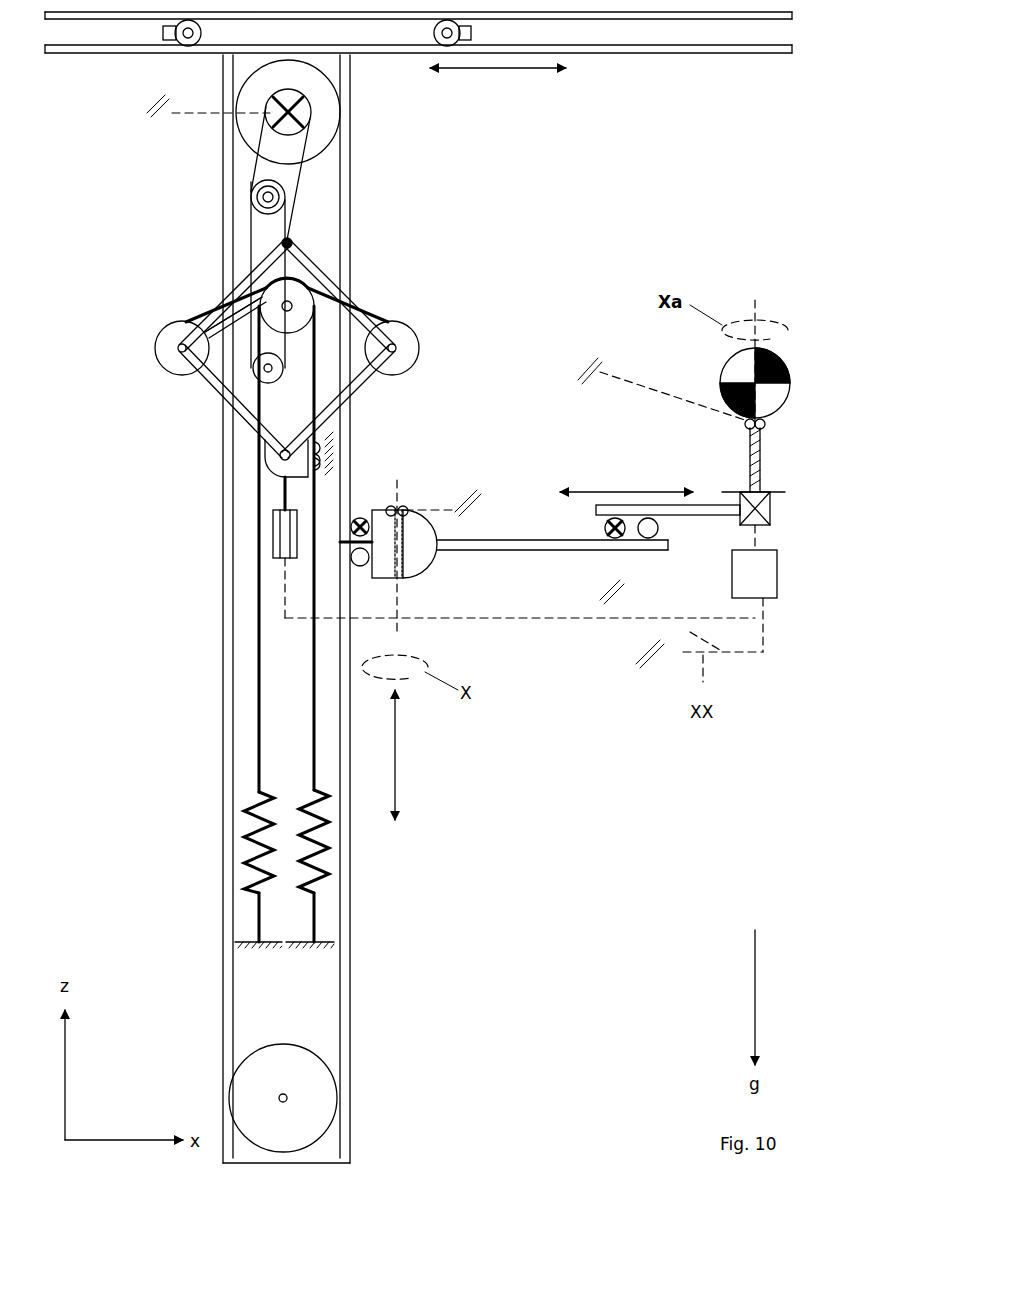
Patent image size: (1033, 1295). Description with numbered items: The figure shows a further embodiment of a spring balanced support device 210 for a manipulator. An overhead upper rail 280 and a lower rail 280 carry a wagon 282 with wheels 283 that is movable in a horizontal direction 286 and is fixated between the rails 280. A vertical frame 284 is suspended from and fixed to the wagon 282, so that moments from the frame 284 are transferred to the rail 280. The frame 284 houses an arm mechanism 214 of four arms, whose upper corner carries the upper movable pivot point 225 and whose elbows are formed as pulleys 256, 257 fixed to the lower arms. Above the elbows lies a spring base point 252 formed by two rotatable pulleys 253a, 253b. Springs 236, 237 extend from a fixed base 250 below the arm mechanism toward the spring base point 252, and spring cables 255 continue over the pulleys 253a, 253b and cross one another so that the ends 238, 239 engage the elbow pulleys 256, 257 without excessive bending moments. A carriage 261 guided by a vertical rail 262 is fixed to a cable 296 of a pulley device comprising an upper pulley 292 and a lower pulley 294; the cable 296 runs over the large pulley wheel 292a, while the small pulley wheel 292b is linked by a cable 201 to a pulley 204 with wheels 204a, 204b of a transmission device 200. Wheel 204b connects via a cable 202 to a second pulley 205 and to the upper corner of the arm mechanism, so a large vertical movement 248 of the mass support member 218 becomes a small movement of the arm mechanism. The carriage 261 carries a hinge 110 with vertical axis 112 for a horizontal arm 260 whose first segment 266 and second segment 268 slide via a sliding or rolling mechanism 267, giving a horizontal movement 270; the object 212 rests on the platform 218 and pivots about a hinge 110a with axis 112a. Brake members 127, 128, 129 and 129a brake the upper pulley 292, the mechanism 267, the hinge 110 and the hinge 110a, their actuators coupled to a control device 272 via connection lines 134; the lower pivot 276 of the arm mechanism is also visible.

The hinge 110 is at (408, 578).
The hinge 110a is at (748, 480).
The vertical axis 112 is at (405, 645).
The vertical hinge axis 112a is at (752, 310).
The brake member 127 is at (362, 516).
The brake member 128 is at (622, 536).
The brake member 129 is at (400, 505).
The brake member 129a is at (745, 420).
The connection lines 134 is at (440, 381).
The transmission device 200 is at (175, 155).
The cable 201 is at (252, 165).
The cable 202 is at (250, 244).
The pulley 204 is at (250, 190).
The pulley wheel 204a is at (257, 200).
The pulley wheel 204b is at (262, 207).
The second pulley 205 is at (255, 372).
The spring balanced support device 210 is at (150, 530).
The object 212 is at (722, 372).
The arm mechanism 214 is at (428, 386).
The mass support member 218 is at (740, 505).
The upper movable pivot point 225 is at (294, 244).
The spring 236 is at (245, 822).
The spring 237 is at (325, 878).
The spring end 238 is at (386, 318).
The spring end 239 is at (190, 322).
The vertical movement 248 is at (397, 760).
The fixed base 250 is at (330, 945).
The spring base point 252 is at (262, 290).
The pulley 253a is at (273, 298).
The pulley 253b is at (233, 314).
The spring cable 255 is at (313, 655).
The elbow pulley 256 is at (410, 350).
The elbow pulley 257 is at (160, 348).
The horizontal arm 260 is at (540, 503).
The carriage 261 is at (432, 562).
The vertical rail 262 is at (348, 820).
The first segment 266 is at (540, 552).
The sliding or rolling mechanism 267 is at (658, 528).
The second segment 268 is at (708, 517).
The horizontal movement 270 is at (608, 488).
The control device 272 is at (732, 565).
The lower pivot 276 is at (268, 465).
The rail 280 is at (510, 15).
The wagon 282 is at (412, 46).
The wheels 283 is at (188, 47).
The vertical frame 284 is at (222, 750).
The horizontal direction 286 is at (528, 70).
The upper pulley 292 is at (336, 90).
The large pulley wheel 292a is at (326, 108).
The small pulley wheel 292b is at (318, 127).
The lower pulley 294 is at (323, 1098).
The cable 296 is at (340, 1020).